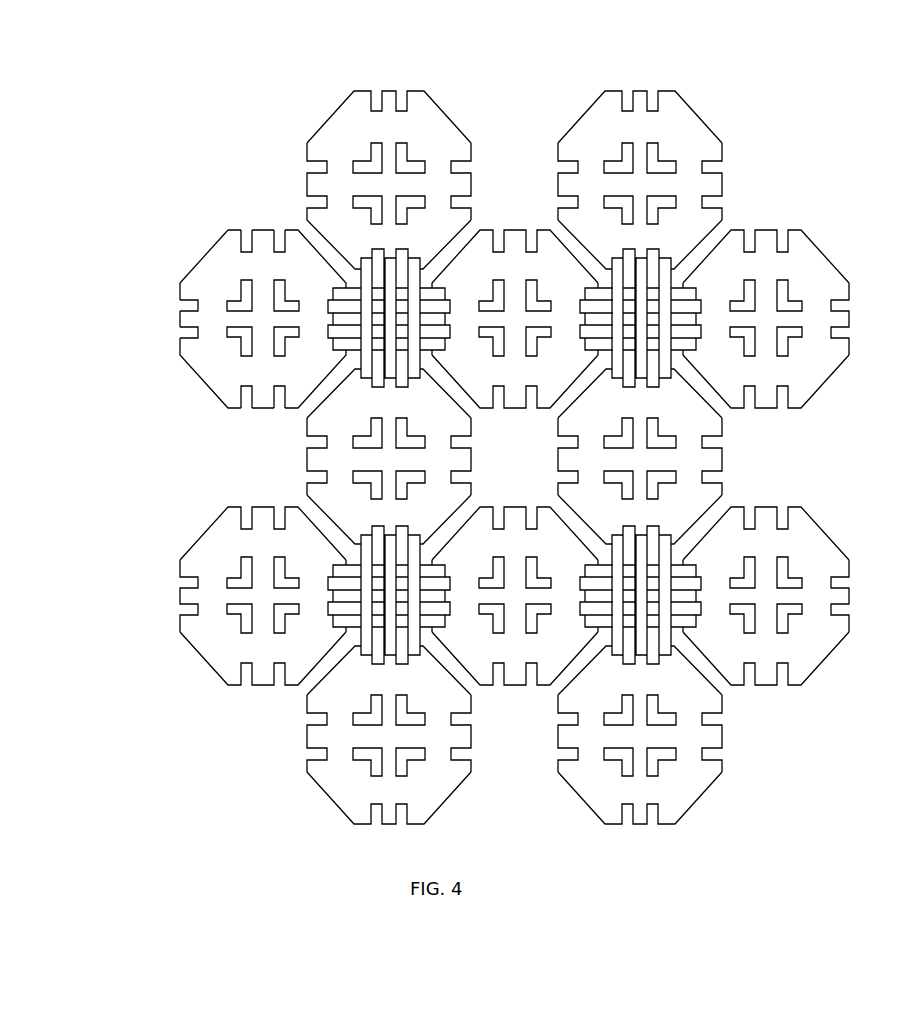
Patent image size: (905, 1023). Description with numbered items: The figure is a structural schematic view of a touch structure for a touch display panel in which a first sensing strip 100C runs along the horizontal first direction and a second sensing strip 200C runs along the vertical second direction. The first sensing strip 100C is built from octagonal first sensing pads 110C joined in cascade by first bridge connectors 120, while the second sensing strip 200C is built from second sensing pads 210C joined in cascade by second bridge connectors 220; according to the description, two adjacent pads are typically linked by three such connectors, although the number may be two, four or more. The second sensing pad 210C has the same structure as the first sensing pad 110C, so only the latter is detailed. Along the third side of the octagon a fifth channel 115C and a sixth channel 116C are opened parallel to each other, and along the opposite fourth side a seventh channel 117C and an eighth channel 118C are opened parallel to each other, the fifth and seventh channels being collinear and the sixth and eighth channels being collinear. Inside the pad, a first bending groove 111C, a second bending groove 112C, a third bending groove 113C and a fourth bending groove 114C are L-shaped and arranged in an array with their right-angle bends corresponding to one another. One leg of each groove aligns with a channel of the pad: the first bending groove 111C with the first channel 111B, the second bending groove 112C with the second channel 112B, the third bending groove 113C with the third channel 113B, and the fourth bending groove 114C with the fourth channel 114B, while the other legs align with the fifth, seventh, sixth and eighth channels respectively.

The first sensing strip 100C is at (200, 281).
The first sensing pad 110C is at (200, 281).
The first bending groove 111C is at (209, 166).
The fifth channel 115C is at (252, 200).
The sixth channel 116C is at (164, 198).
The third channel 113B is at (139, 304).
The fourth channel 114B is at (139, 339).
The third bending groove 113C is at (153, 282).
The fourth bending groove 114C is at (161, 358).
The second bending groove 112C is at (196, 375).
The eighth channel 118C is at (146, 420).
The seventh channel 117C is at (205, 432).
The first channel 111B is at (303, 206).
The second channel 112B is at (303, 404).
The second sensing strip 200C is at (376, 141).
The second sensing pad 210C is at (418, 130).
The second bridge connector 220 is at (410, 258).
The first bridge connector 120 is at (446, 292).